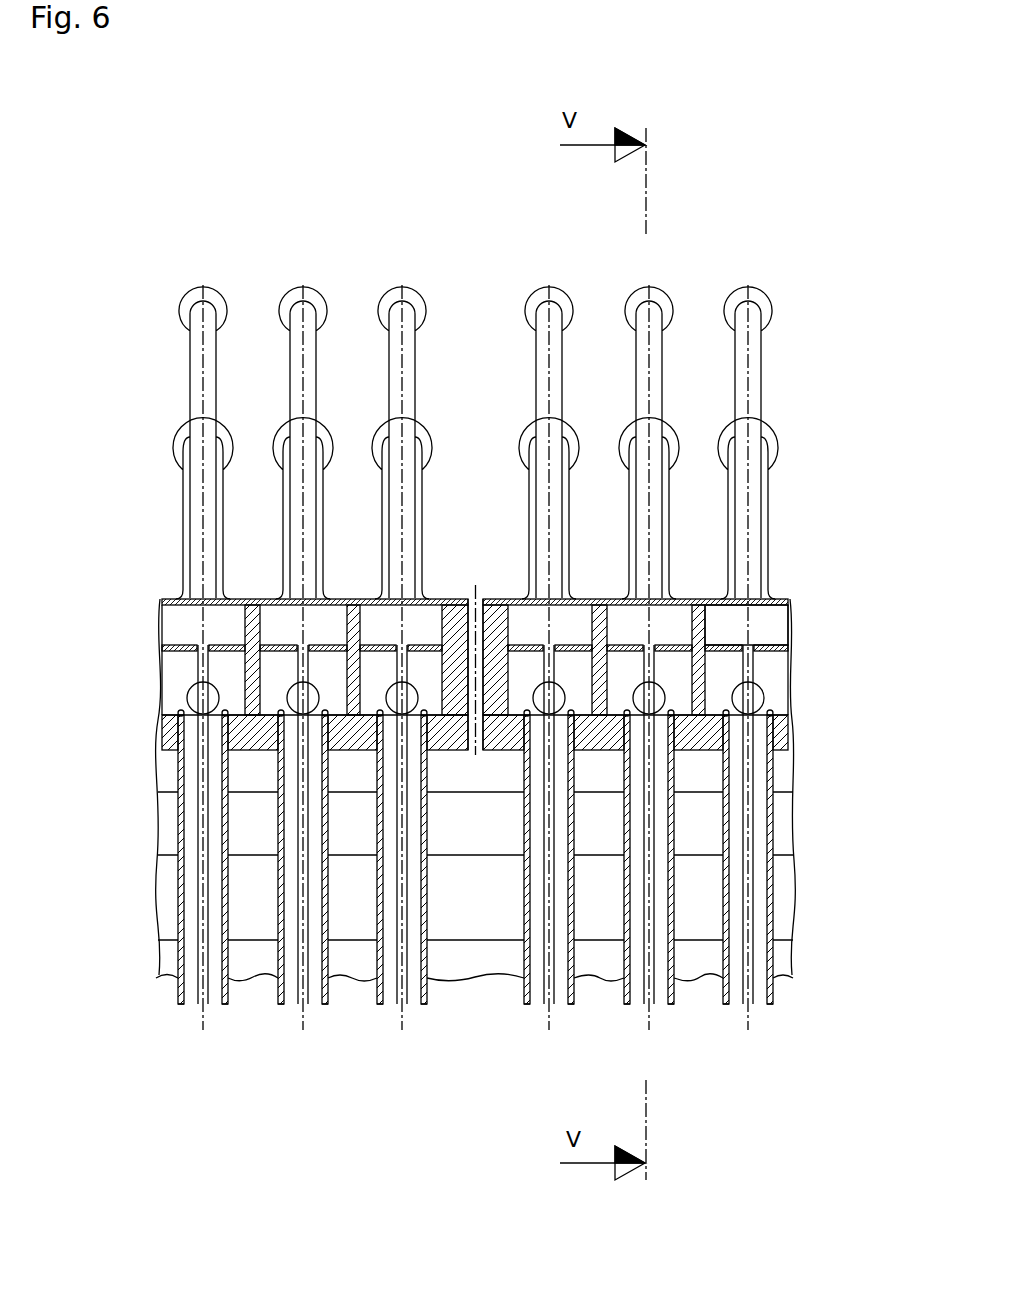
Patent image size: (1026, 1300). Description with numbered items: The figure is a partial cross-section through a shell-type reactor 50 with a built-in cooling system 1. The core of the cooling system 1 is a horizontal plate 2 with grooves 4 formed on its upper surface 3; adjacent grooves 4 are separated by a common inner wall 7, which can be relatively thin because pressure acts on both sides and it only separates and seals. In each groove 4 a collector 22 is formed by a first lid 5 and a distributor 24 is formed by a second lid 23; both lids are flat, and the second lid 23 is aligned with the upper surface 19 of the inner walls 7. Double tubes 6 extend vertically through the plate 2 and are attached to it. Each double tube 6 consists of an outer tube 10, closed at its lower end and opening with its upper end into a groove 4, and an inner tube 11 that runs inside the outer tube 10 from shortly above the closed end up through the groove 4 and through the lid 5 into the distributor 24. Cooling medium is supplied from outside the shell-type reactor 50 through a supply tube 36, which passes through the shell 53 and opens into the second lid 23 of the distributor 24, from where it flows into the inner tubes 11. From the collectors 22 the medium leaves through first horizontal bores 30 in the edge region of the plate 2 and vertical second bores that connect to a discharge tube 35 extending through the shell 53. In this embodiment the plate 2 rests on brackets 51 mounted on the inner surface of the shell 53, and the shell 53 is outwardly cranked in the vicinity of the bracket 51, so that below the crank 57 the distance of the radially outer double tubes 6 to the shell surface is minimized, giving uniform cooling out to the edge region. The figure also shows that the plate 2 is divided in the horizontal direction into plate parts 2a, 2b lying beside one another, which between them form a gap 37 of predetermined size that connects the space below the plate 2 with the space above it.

The cooling system 1 is at (316, 224).
The shell-type reactor 50 is at (485, 752).
The horizontal plate 2 is at (506, 597).
The plate part 2a is at (160, 625).
The plate part 2b is at (790, 613).
The upper surface 3 is at (168, 598).
The groove 4 is at (165, 696).
The lid 5 is at (790, 665).
The double tube 6 is at (230, 1006).
The inner wall 7 is at (350, 599).
The outer tube 10 is at (180, 990).
The inner tube 11 is at (198, 1003).
The upper surface of the inner walls 19 is at (248, 600).
The collector 22 is at (787, 693).
The second lid 23 is at (785, 597).
The distributor 24 is at (775, 635).
The first horizontal bore 30 is at (765, 705).
The discharge tube 35 is at (183, 523).
The supply tube 36 is at (187, 372).
The gap 37 is at (478, 752).
The bracket 51 is at (160, 830).
The shell 53 is at (167, 955).
The crank 57 is at (160, 887).